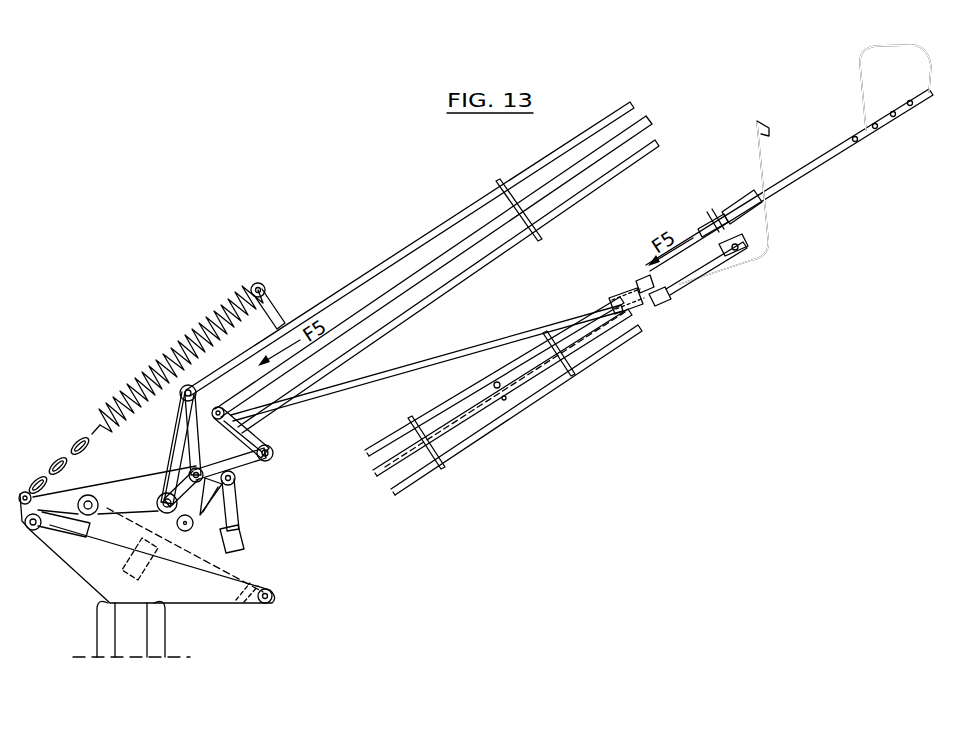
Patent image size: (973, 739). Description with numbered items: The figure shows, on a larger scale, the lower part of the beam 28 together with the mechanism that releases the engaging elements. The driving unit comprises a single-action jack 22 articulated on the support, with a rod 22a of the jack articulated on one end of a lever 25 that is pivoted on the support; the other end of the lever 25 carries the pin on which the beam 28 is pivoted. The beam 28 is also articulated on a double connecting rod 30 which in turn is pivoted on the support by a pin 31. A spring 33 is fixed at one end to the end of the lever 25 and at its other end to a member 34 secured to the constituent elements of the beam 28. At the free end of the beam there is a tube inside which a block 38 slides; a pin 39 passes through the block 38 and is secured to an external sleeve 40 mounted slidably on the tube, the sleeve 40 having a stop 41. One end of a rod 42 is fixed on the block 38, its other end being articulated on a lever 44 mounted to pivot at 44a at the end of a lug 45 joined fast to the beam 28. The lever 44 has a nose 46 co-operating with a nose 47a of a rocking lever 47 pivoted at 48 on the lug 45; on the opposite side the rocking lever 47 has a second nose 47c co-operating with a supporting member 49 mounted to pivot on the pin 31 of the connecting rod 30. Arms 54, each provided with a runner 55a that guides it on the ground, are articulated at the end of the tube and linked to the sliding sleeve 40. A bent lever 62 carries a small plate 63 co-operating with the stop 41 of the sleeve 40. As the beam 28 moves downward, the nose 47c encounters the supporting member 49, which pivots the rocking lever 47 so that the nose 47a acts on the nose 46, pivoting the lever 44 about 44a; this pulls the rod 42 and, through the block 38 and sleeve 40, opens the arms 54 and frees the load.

The single-action jack 22 is at (213, 580).
The rod of the jack 22a is at (68, 536).
The lever 25 is at (110, 493).
The beam 28 is at (474, 190).
The connecting rod 30 is at (172, 443).
The pin of the connecting rod 31 is at (157, 493).
The spring 33 is at (162, 370).
The member 34 is at (280, 313).
The block 38 is at (644, 313).
The pin 39 is at (620, 295).
The sleeve 40 is at (645, 282).
The stop 41 is at (663, 300).
The rod 42 is at (310, 353).
The lever 44 is at (235, 424).
The pivot of the lever 44a is at (273, 455).
The lug 45 is at (262, 437).
The nose of the lever 46 is at (262, 468).
The rocking lever 47 is at (237, 513).
The nose of the rocking lever 47a is at (246, 476).
The second nose 47c is at (212, 499).
The pivot of the rocking lever 48 is at (233, 484).
The supporting member 49 is at (242, 527).
The arm 54 is at (790, 186).
The runner 55a is at (858, 83).
The bent lever 62 is at (778, 230).
The small plate 63 is at (668, 294).